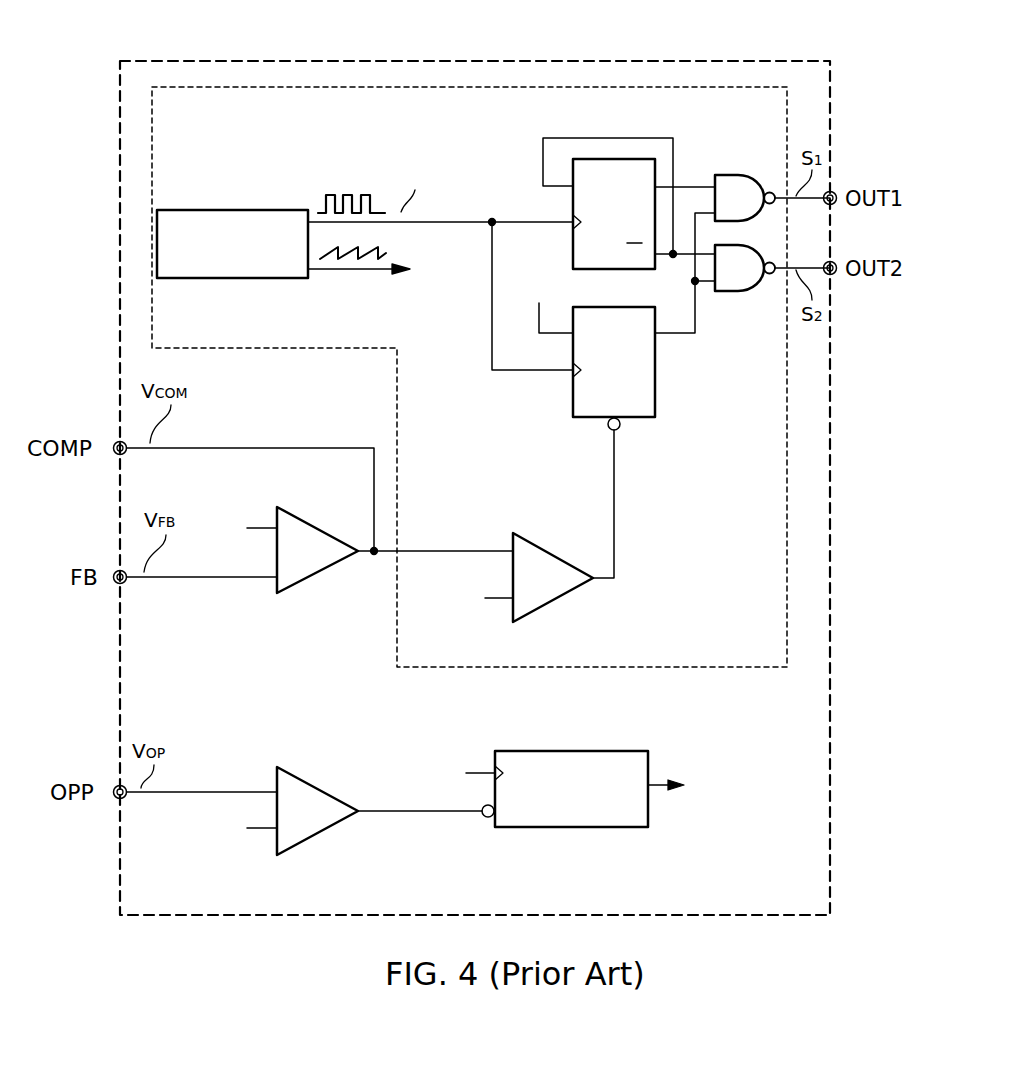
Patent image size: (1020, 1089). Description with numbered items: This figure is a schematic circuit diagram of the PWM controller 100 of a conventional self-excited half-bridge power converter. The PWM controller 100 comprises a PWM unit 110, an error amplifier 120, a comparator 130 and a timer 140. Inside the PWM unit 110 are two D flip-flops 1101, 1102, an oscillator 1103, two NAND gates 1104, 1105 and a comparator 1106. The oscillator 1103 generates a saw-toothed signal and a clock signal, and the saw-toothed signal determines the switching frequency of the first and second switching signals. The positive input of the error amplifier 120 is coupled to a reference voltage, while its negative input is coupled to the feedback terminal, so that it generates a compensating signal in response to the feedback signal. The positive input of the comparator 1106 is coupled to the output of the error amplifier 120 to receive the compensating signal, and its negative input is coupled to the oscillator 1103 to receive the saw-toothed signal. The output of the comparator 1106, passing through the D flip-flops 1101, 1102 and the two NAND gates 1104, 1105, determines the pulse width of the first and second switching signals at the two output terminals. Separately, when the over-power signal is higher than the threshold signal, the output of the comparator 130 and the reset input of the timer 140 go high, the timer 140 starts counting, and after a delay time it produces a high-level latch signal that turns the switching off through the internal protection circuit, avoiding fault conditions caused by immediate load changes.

The PWM controller 100 is at (782, 60).
The PWM unit 110 is at (190, 86).
The error amplifier 120 is at (322, 578).
The comparator 130 is at (312, 843).
The timer 140 is at (626, 829).
The D flip-flop 1101 is at (617, 157).
The D flip-flop 1102 is at (658, 386).
The oscillator 1103 is at (237, 208).
The NAND gate 1104 is at (734, 172).
The NAND gate 1105 is at (740, 292).
The comparator 1106 is at (563, 605).